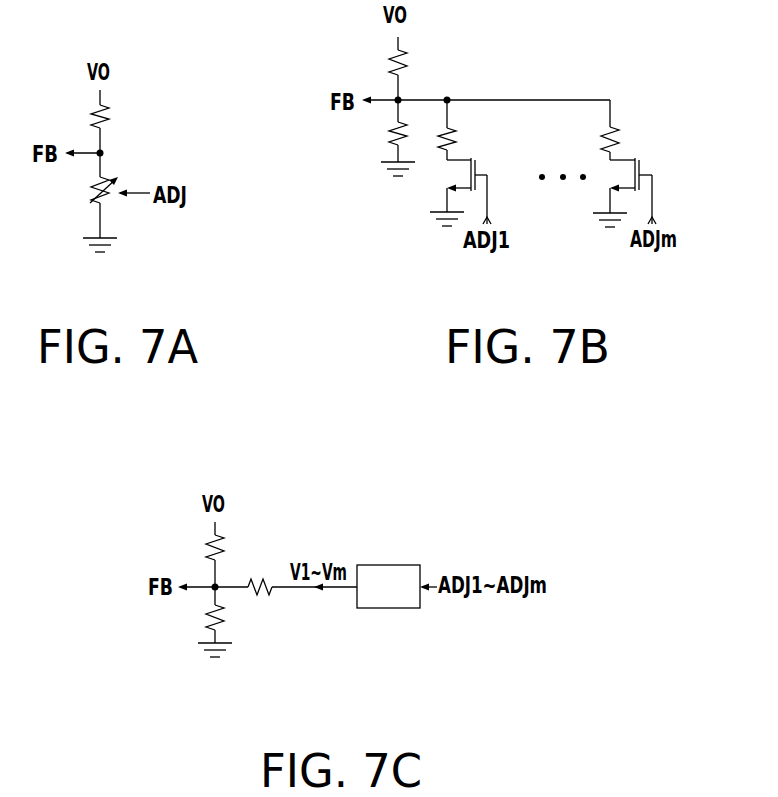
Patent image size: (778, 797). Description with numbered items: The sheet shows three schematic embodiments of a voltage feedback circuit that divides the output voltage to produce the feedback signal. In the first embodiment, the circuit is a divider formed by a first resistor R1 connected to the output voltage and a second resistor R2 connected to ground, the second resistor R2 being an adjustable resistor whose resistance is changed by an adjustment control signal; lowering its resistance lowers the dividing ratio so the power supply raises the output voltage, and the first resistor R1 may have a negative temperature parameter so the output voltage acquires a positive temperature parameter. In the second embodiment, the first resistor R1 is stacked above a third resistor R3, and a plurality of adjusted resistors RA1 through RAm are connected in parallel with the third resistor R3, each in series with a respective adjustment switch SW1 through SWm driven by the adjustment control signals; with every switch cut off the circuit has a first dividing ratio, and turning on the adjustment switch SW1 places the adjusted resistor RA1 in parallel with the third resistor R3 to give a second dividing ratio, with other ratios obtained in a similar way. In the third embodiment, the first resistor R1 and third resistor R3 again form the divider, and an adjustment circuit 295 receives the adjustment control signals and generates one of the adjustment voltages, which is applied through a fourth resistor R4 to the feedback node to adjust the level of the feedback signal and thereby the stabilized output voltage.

In FIG. 7A, the first resistor R1 is at (95, 121).
In FIG. 7B, the first resistor R1 is at (391, 68).
In FIG. 7C, the first resistor R1 is at (210, 554).
In FIG. 7A, the second resistor R2 is at (90, 193).
In FIG. 7B, the third resistor R3 is at (391, 140).
In FIG. 7C, the third resistor R3 is at (210, 626).
In FIG. 7C, the fourth resistor R4 is at (268, 591).
In FIG. 7B, the first adjusted resistor RA1 is at (451, 139).
In FIG. 7B, the m-th adjusted resistor RAm is at (614, 140).
In FIG. 7B, the first adjustment switch SW1 is at (473, 159).
In FIG. 7B, the m-th adjustment switch SWm is at (631, 161).
In FIG. 7C, the adjustment circuit 295 is at (406, 598).